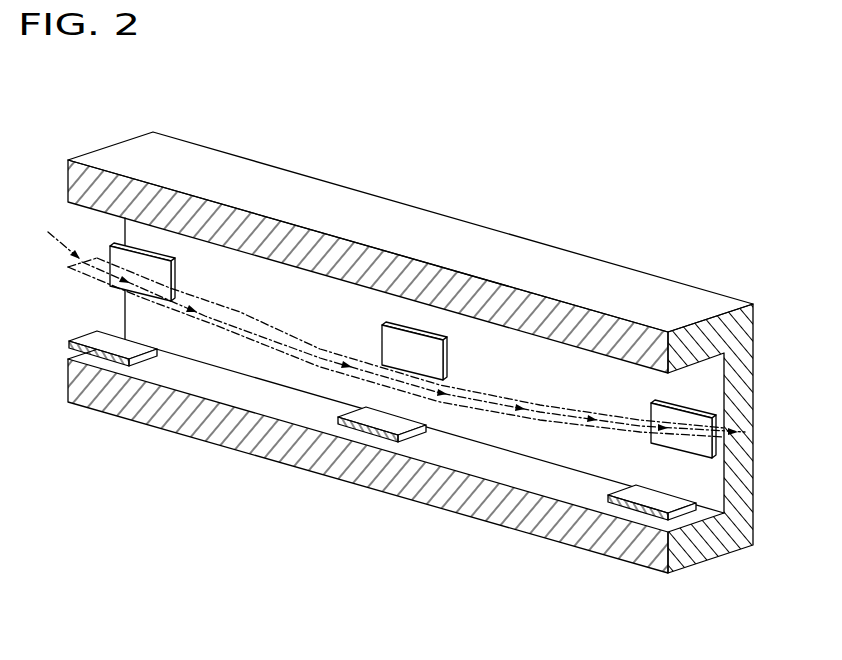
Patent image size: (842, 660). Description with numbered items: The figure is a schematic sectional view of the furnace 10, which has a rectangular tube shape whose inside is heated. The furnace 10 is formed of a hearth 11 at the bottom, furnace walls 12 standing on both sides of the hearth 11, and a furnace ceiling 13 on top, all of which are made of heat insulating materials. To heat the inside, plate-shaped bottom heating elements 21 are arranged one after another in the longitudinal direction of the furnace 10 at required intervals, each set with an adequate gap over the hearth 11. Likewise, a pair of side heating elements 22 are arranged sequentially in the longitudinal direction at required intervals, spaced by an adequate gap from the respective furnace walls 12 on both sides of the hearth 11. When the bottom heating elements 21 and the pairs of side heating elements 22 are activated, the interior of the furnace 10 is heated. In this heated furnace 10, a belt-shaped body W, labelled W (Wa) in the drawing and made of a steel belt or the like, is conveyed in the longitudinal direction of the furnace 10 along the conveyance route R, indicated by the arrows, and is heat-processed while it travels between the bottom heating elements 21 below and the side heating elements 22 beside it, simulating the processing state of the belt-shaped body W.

The furnace 10 is at (435, 357).
The hearth 11 is at (505, 512).
The furnace wall 12 is at (757, 402).
The furnace ceiling 13 is at (558, 266).
The bottom heating element 21 is at (98, 358).
The side heating element 22 is at (147, 265).
The belt-shaped body W is at (386, 278).
The workpiece sheet portion Wa is at (240, 307).
The conveyance route R is at (262, 345).